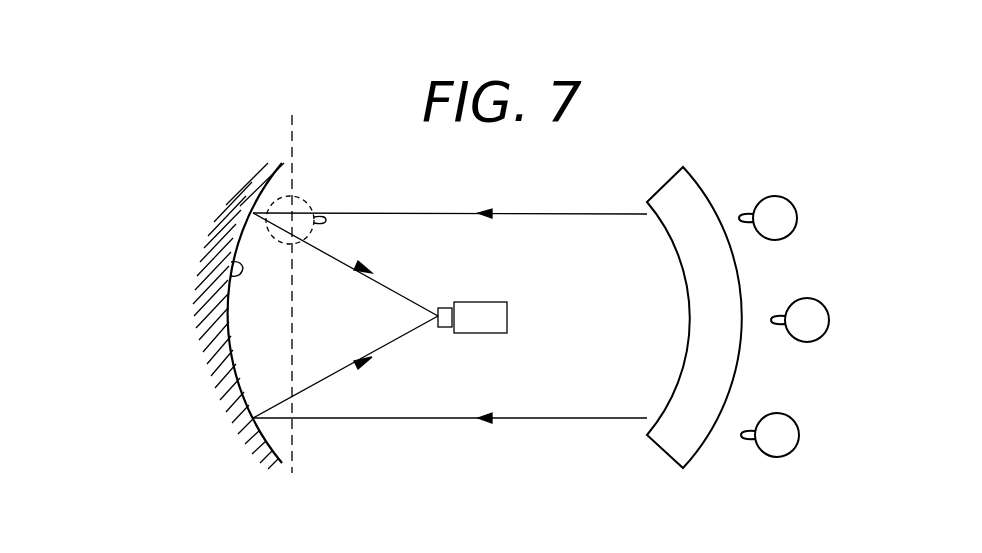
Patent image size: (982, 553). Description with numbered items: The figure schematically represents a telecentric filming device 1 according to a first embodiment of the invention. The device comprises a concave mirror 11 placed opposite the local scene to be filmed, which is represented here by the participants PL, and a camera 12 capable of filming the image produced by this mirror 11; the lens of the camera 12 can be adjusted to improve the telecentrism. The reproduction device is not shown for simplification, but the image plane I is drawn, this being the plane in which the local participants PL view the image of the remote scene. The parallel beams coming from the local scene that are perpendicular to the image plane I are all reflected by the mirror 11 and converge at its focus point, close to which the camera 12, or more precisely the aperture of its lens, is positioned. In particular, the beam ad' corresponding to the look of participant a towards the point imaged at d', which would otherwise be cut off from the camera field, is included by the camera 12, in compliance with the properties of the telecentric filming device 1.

The telecentric filming device 1 is at (510, 480).
The concave mirror 11 is at (232, 283).
The camera 12 is at (507, 317).
The image plane I is at (291, 278).
The image point of d d' is at (296, 204).
The participant a is at (768, 202).
The participants PL is at (772, 226).